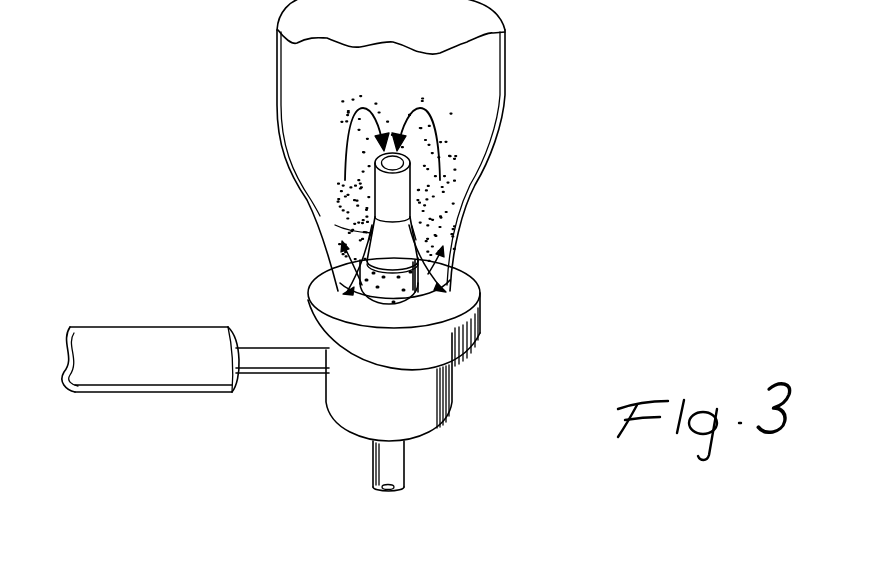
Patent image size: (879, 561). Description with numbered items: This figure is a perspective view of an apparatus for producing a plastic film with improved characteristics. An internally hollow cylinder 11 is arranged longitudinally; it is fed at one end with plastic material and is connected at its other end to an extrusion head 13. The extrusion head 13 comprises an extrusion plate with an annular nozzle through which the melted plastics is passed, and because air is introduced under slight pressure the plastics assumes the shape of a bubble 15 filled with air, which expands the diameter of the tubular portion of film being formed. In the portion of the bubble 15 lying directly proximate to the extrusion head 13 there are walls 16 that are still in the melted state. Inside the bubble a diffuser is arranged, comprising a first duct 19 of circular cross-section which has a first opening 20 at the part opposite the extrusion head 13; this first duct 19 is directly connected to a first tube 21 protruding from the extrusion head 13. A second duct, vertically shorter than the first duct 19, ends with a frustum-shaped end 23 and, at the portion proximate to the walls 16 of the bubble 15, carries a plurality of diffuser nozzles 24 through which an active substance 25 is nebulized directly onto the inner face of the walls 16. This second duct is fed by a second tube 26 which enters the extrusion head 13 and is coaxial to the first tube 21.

The internally hollow cylinder 11 is at (100, 328).
The extrusion head 13 is at (543, 363).
The bubble 15 is at (580, 85).
The walls 16 is at (560, 242).
The first duct 19 is at (376, 213).
The first opening 20 is at (386, 160).
The first tube 21 is at (386, 488).
The frustum-shaped end 23 is at (368, 232).
The diffuser nozzles 24 is at (345, 314).
The active substance 25 is at (617, 168).
The second tube 26 is at (457, 462).